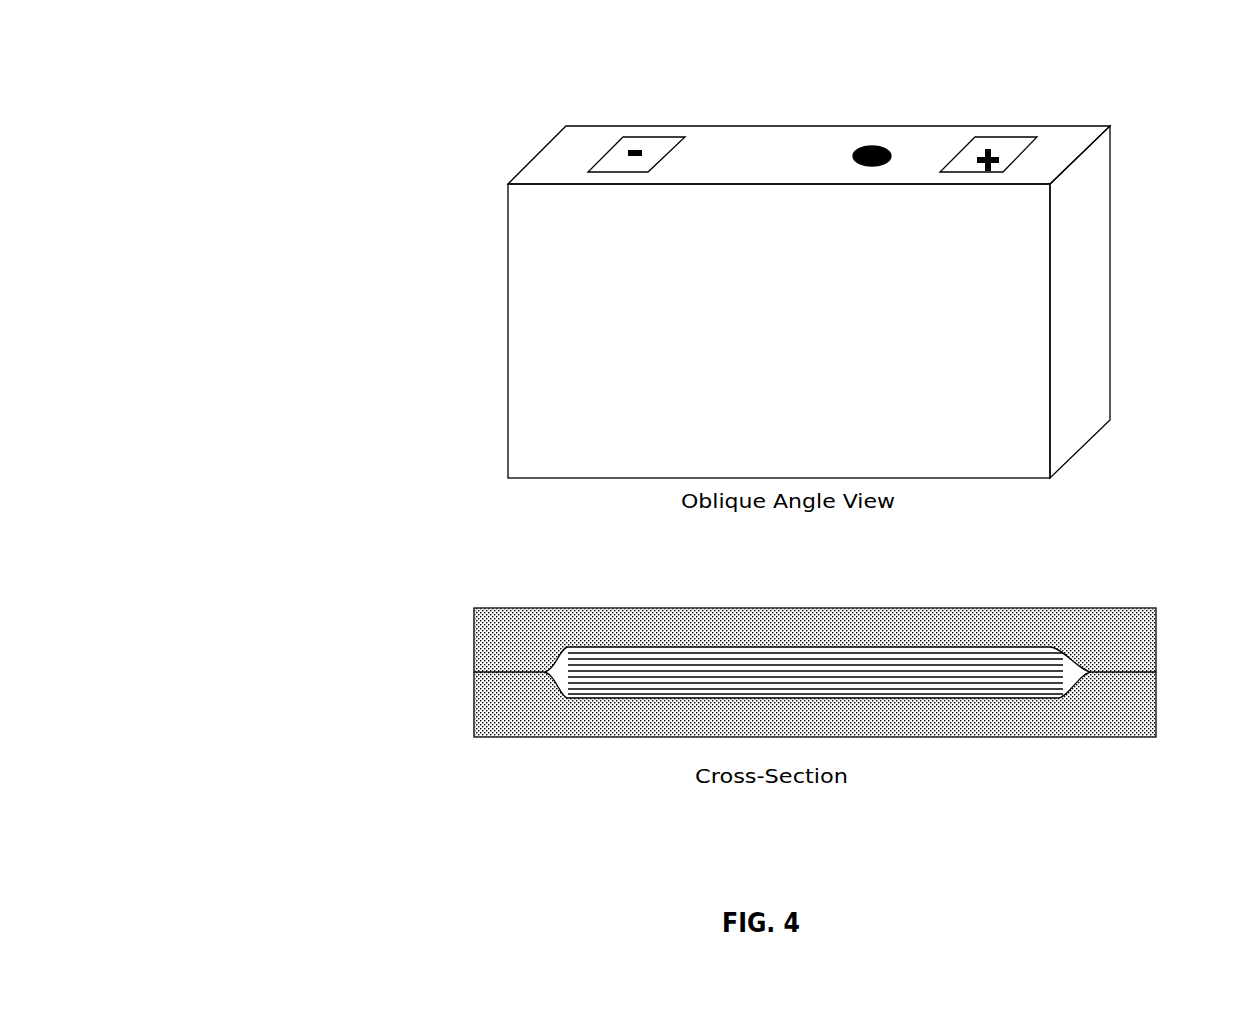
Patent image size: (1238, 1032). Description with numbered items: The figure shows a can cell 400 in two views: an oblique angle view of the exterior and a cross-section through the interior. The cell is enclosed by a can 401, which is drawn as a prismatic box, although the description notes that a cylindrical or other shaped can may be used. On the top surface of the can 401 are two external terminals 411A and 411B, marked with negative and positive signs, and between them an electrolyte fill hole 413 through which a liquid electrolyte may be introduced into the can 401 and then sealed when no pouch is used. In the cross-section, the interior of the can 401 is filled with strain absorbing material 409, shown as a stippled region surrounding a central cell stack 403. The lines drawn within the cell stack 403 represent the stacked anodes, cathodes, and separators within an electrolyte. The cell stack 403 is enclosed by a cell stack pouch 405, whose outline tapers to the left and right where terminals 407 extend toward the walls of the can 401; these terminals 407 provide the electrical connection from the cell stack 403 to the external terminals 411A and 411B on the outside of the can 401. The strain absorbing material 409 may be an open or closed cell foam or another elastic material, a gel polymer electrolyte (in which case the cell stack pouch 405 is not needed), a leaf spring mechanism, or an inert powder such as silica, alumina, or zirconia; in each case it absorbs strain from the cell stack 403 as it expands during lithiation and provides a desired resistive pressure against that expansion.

The can cell 400 is at (314, 98).
The can 401 is at (1062, 452).
The cell stack 403 is at (1000, 683).
The cell stack pouch 405 is at (1078, 681).
The terminals 407 is at (496, 672).
The strain absorbing material 409 is at (521, 627).
The external terminal 411A is at (660, 140).
The external terminal 411B is at (1010, 140).
The electrolyte fill hole 413 is at (868, 140).